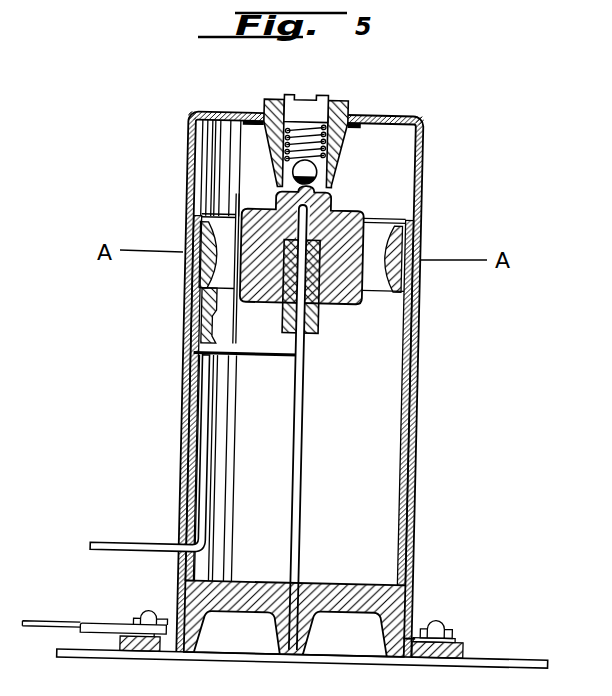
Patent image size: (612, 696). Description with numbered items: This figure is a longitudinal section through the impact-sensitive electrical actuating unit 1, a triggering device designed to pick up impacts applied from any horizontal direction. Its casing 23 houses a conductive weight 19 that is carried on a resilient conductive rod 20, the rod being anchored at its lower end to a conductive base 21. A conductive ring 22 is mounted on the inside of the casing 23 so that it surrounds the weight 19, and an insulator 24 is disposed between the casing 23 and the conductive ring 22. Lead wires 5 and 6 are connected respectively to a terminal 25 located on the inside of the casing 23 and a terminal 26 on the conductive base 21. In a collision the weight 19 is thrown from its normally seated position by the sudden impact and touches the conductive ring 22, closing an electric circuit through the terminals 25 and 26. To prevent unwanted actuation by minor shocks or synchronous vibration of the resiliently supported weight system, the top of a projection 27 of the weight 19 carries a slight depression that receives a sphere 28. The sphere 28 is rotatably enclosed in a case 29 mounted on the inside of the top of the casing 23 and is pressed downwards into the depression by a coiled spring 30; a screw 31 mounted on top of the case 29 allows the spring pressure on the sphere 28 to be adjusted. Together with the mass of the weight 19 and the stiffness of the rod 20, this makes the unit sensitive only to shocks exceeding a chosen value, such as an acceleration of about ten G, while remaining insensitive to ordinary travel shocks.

The impact-sensitive electrical actuating unit 1 is at (143, 212).
The lead wire 5 is at (157, 547).
The lead wire 6 is at (50, 617).
The conductive weight 19 is at (358, 245).
The resilient conductive rod 20 is at (230, 428).
The conductive base 21 is at (192, 600).
The conductive ring 22 is at (197, 277).
The casing 23 is at (183, 420).
The insulator 24 is at (190, 318).
The terminal 25 is at (202, 342).
The terminal 26 is at (107, 623).
The projection 27 is at (273, 197).
The sphere 28 is at (350, 123).
The case 29 is at (268, 115).
The coiled spring 30 is at (308, 135).
The screw 31 is at (292, 95).